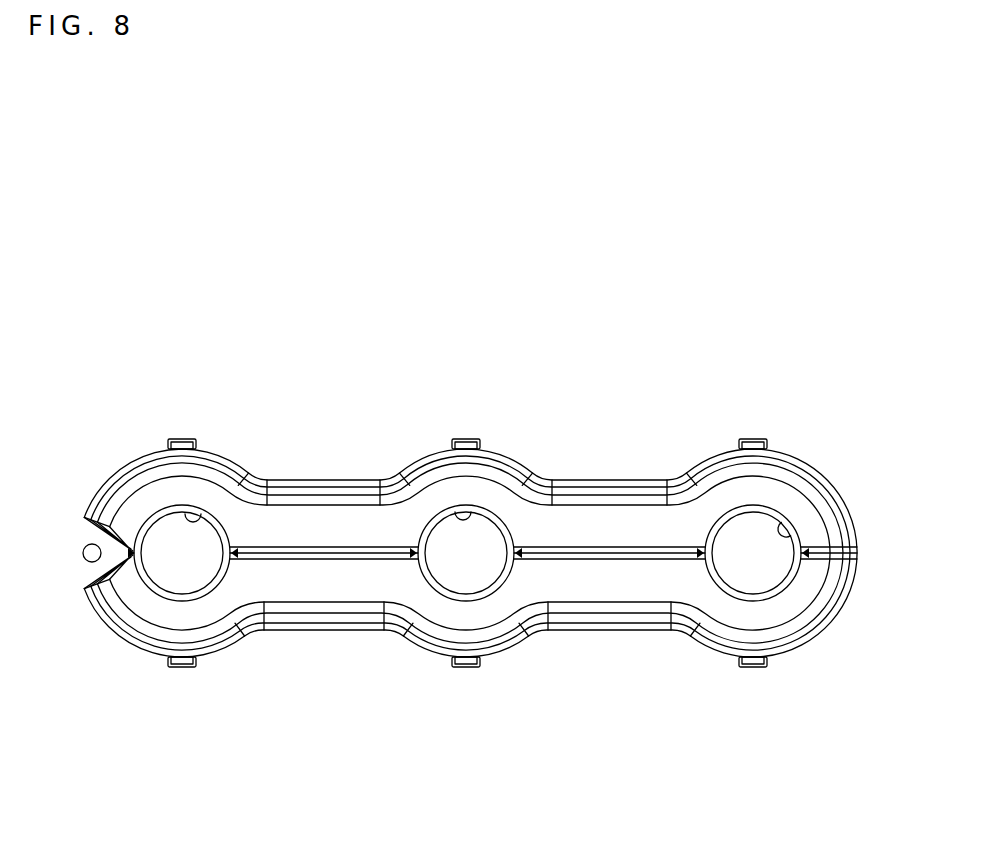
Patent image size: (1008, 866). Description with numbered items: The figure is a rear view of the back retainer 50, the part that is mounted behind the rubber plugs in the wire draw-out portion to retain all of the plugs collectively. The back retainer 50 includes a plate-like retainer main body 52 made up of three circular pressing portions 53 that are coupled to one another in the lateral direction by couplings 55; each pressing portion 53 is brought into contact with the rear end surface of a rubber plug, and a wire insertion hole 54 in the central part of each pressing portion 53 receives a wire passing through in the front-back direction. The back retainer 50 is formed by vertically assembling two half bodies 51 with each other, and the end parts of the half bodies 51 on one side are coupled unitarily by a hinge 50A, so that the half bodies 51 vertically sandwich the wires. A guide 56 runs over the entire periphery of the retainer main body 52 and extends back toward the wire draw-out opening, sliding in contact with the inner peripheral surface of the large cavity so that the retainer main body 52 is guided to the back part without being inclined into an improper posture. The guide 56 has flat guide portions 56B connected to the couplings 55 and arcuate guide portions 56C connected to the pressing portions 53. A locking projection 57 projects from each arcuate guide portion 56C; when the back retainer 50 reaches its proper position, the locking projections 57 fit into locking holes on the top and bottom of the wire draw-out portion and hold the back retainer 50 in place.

The back retainer 50 is at (481, 538).
The hinge 50A is at (85, 562).
The half body 51 is at (322, 466).
The retainer main body 52 is at (609, 612).
The pressing portion 53 is at (773, 490).
The wire insertion hole 54 is at (198, 518).
The coupling 55 is at (633, 518).
The guide 56 is at (828, 644).
The flat guide portion 56B is at (607, 484).
The arcuate guide portion 56C is at (495, 470).
The locking projection 57 is at (180, 439).